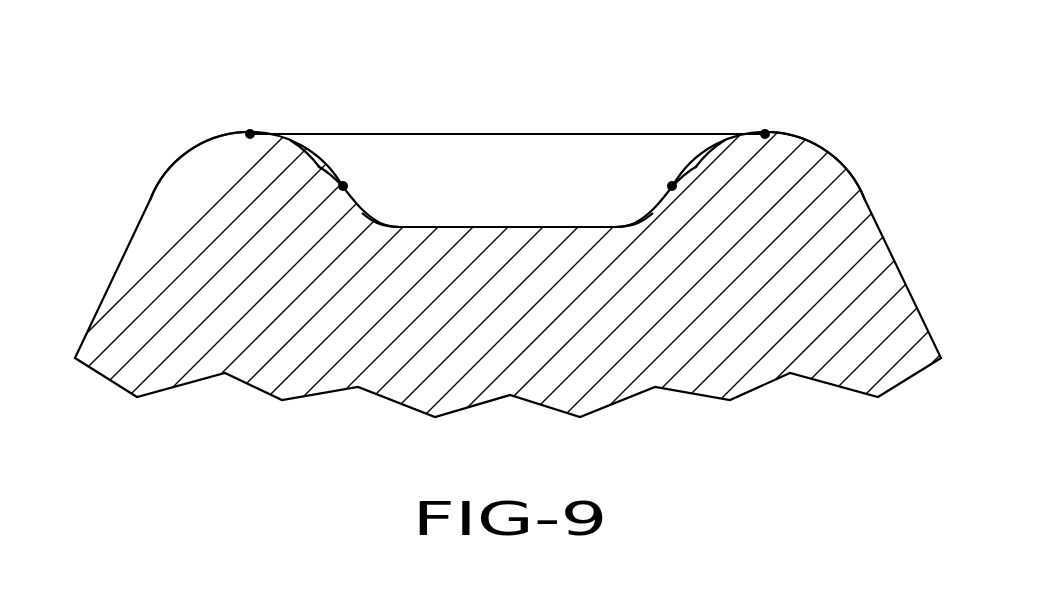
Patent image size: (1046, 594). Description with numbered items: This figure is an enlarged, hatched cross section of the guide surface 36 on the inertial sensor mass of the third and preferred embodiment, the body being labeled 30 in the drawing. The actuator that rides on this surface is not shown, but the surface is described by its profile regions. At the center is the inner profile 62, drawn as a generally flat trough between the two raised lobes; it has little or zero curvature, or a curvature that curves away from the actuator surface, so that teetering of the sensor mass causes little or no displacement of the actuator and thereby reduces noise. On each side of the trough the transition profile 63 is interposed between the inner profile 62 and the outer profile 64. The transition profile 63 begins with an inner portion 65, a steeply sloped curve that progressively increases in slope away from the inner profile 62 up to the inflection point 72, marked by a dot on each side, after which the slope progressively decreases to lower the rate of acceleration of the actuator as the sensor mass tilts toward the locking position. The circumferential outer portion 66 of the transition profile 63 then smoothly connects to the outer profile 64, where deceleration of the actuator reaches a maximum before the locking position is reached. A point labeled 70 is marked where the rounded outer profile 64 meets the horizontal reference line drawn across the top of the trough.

The airfoil tip 30 is at (99, 294).
The guide surface 36 is at (448, 220).
The inner profile 62 is at (503, 220).
The transition profile 63 is at (334, 152).
The outer profile 64 is at (214, 137).
The inner portion 65 is at (408, 226).
The circumferential outer portion 66 is at (304, 147).
The apex point 70 is at (250, 130).
The inflection point 72 is at (346, 184).